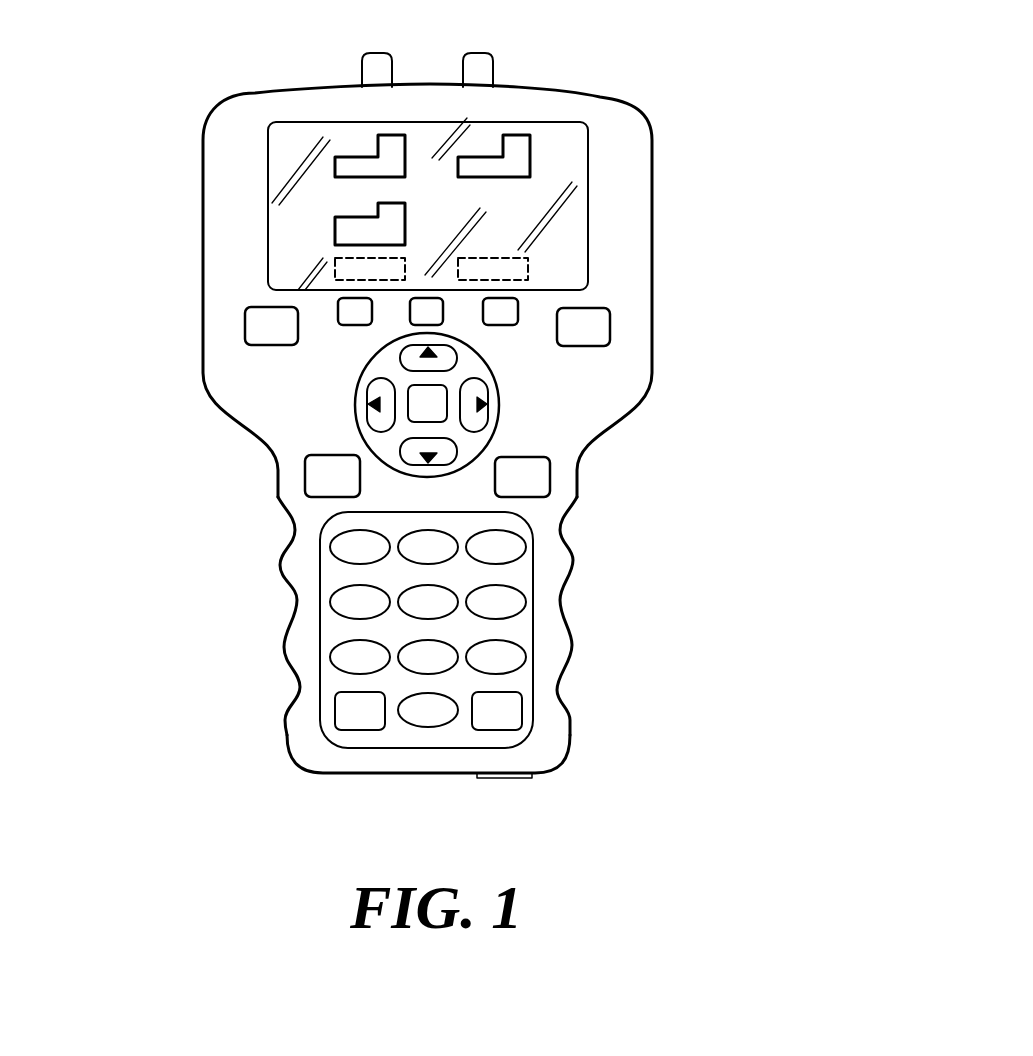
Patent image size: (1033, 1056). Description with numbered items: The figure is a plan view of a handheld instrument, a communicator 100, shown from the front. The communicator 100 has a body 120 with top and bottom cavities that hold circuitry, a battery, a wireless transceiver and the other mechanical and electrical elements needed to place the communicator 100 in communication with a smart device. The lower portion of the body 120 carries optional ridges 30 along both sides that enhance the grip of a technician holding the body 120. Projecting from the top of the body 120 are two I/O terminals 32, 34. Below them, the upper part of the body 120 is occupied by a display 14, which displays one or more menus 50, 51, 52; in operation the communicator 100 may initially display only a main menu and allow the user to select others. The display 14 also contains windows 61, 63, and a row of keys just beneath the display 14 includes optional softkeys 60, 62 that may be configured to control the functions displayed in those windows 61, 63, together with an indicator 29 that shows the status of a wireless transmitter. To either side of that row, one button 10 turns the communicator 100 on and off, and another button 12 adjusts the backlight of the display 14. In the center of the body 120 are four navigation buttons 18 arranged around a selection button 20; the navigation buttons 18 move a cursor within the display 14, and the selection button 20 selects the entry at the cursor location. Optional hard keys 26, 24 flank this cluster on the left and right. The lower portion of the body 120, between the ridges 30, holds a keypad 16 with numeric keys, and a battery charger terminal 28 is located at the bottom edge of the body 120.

The communicator 100 is at (441, 416).
The body 120 is at (652, 195).
The ridges 30 is at (282, 683).
The I/O terminal 32 is at (367, 55).
The I/O terminal 34 is at (492, 55).
The display 14 is at (268, 165).
The menu 50 is at (356, 157).
The menu 51 is at (530, 150).
The menu 52 is at (335, 222).
The window 61 is at (335, 262).
The window 63 is at (530, 260).
The softkey 60 is at (338, 302).
The indicator 29 is at (443, 318).
The softkey 62 is at (520, 298).
The button 10 is at (252, 328).
The button 12 is at (610, 318).
The navigation buttons 18 is at (432, 405).
The selection button 20 is at (443, 398).
The hard key 26 is at (315, 472).
The hard key 24 is at (542, 477).
The keypad 16 is at (325, 595).
The battery charger terminal 28 is at (531, 777).